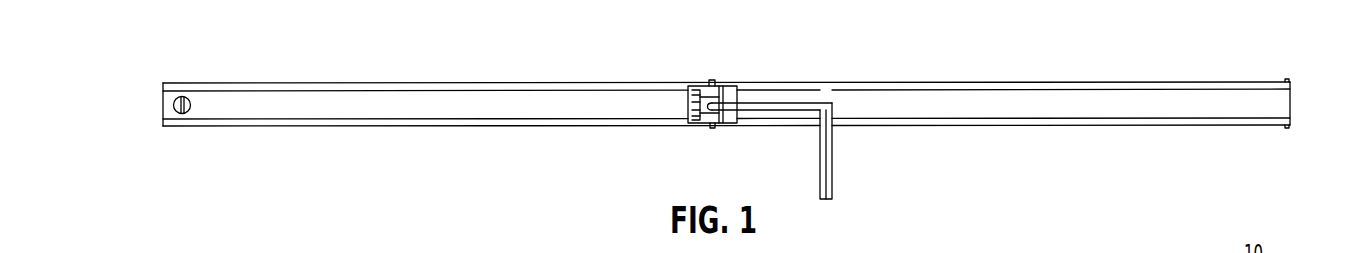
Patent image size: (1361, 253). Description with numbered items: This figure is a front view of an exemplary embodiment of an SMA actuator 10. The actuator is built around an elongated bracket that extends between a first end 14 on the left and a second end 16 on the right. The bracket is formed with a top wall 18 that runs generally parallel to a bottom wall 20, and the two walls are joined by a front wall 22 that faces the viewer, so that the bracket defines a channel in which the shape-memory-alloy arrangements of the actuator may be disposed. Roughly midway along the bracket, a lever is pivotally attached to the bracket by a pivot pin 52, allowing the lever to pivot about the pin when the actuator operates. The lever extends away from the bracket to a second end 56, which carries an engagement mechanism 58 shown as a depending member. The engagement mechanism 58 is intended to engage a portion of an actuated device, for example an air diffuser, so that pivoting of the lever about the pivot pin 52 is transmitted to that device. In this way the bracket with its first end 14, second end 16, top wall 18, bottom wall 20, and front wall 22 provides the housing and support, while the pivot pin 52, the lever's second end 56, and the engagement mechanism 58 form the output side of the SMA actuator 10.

The SMA actuator 10 is at (1229, 26).
The first end 14 is at (163, 109).
The second end 16 is at (1290, 107).
The top wall 18 is at (425, 83).
The bottom wall 20 is at (440, 126).
The front wall 22 is at (240, 107).
The pivot pin 52 is at (712, 79).
The second end 56 is at (798, 179).
The engagement mechanism 58 is at (827, 192).